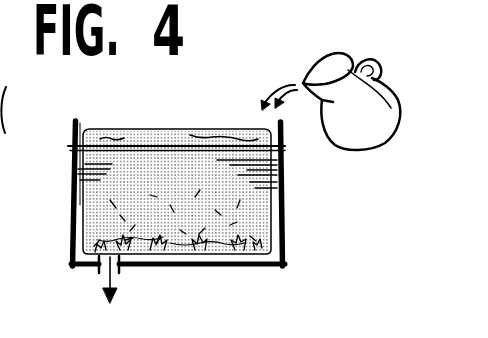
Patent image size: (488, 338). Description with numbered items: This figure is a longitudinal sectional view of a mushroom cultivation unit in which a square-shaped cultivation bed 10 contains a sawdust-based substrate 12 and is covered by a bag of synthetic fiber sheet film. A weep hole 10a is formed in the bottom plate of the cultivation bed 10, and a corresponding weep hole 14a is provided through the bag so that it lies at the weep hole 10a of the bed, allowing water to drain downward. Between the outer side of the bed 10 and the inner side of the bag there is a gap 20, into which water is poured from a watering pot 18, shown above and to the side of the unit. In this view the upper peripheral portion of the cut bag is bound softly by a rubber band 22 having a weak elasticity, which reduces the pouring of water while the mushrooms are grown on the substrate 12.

The cultivation bed 10 is at (163, 130).
The weep hole 10a is at (118, 264).
The sawdust-based substrate 12 is at (252, 228).
The weep hole 14a is at (101, 266).
The watering pot 18 is at (362, 150).
The gap 20 is at (82, 133).
The rubber band 22 is at (285, 148).